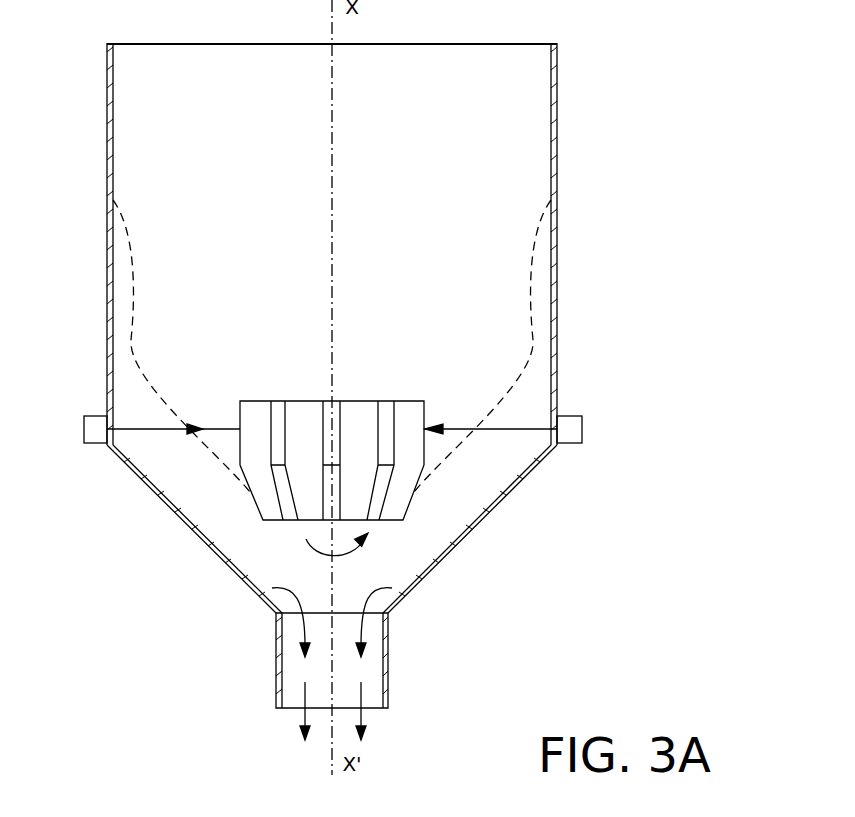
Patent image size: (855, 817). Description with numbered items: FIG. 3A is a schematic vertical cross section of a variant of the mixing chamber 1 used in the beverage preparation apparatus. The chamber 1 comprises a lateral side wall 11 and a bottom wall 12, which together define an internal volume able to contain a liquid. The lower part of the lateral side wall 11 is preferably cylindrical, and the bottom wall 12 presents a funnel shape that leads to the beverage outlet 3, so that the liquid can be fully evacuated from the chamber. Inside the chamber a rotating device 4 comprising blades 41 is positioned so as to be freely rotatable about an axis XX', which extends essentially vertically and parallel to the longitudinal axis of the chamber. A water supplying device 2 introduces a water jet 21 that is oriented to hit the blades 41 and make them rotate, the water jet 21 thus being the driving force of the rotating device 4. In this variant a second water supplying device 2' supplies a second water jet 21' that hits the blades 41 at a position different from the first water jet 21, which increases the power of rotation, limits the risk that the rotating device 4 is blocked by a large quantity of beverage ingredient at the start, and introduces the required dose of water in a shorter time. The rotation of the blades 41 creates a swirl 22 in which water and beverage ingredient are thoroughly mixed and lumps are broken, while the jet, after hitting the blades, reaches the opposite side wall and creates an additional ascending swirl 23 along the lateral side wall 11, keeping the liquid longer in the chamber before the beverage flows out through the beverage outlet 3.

The chamber 1 is at (630, 38).
The lateral side wall 11 is at (107, 168).
The bottom wall 12 is at (208, 552).
The water supplying device 2 is at (65, 420).
The second water supplying device 2' is at (603, 419).
The water jet 21 is at (173, 397).
The second water jet 21' is at (493, 468).
The swirl 22 is at (200, 455).
The additional swirl 23 is at (535, 332).
The beverage outlet 3 is at (276, 672).
The rotating device 4 is at (432, 410).
The blades 41 is at (250, 401).